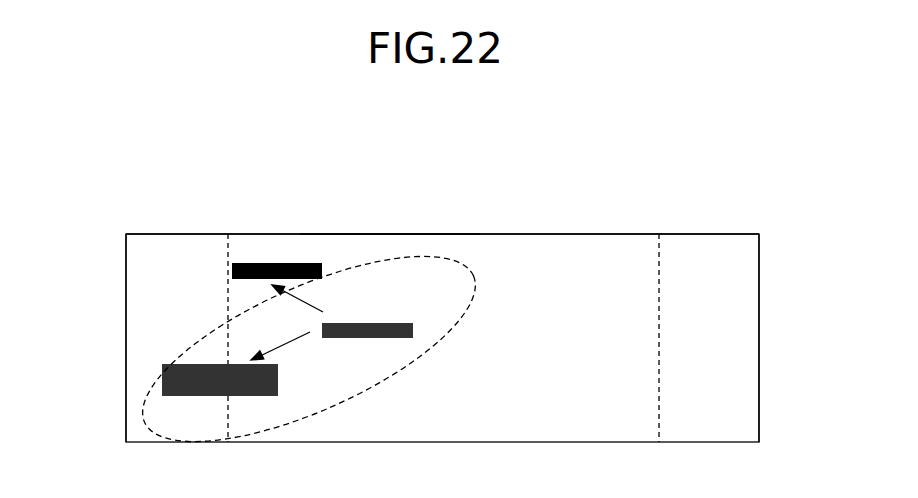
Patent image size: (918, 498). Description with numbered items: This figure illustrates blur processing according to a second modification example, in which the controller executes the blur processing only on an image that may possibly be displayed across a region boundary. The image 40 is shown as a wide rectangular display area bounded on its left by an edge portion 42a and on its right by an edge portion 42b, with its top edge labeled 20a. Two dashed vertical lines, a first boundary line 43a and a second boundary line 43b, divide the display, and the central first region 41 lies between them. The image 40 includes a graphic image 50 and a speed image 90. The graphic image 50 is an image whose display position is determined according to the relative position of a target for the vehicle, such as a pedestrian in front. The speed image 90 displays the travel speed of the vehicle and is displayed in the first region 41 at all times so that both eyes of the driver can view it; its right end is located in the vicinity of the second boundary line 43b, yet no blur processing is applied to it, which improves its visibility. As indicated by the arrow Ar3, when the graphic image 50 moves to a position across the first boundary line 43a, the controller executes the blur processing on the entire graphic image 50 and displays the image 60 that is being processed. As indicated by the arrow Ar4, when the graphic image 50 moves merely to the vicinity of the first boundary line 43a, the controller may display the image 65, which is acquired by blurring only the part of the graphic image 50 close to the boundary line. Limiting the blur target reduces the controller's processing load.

The image 40 is at (572, 295).
The display surface 20a is at (548, 272).
The first region 41 is at (485, 262).
The left edge portion 42a is at (162, 268).
The right edge portion 42b is at (710, 267).
The first boundary line 43a is at (228, 233).
The second boundary line 43b is at (659, 233).
The image 65 is at (277, 253).
The graphic image 50 is at (390, 318).
The image being processed 60 is at (205, 357).
The arrow Ar4 is at (318, 303).
The arrow Ar3 is at (290, 340).
The speed image 90 is at (590, 423).